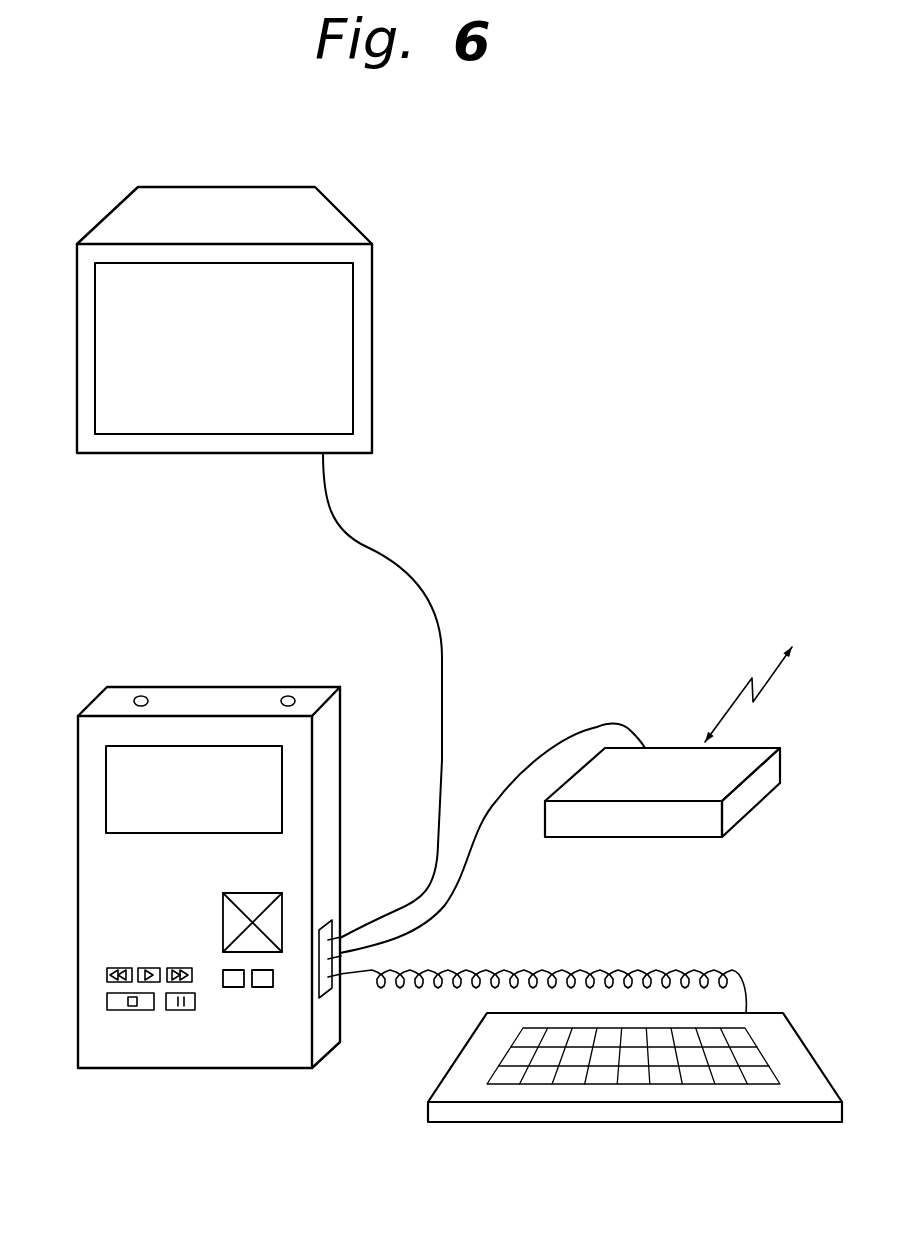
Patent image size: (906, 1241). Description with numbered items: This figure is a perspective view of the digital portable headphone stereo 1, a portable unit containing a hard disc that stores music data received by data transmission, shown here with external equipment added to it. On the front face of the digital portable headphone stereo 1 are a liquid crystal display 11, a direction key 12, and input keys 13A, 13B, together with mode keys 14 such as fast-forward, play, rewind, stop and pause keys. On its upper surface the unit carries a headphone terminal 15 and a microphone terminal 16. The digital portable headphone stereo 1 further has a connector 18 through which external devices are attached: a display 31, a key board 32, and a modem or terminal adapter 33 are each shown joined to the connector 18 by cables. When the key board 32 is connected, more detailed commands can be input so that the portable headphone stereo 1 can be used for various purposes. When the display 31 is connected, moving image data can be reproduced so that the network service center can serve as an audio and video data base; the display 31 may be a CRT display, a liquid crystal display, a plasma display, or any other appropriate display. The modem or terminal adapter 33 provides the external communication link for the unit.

The digital portable headphone stereo 1 is at (222, 676).
The liquid crystal display 11 is at (274, 792).
The direction key 12 is at (279, 907).
The input key 13A is at (263, 988).
The input key 13B is at (233, 988).
The mode keys 14 is at (100, 987).
The headphone terminal 15 is at (290, 695).
The microphone terminal 16 is at (141, 695).
The connector 18 is at (335, 998).
The display 31 is at (372, 329).
The key board 32 is at (630, 1105).
The modem or terminal adapter 33 is at (750, 803).